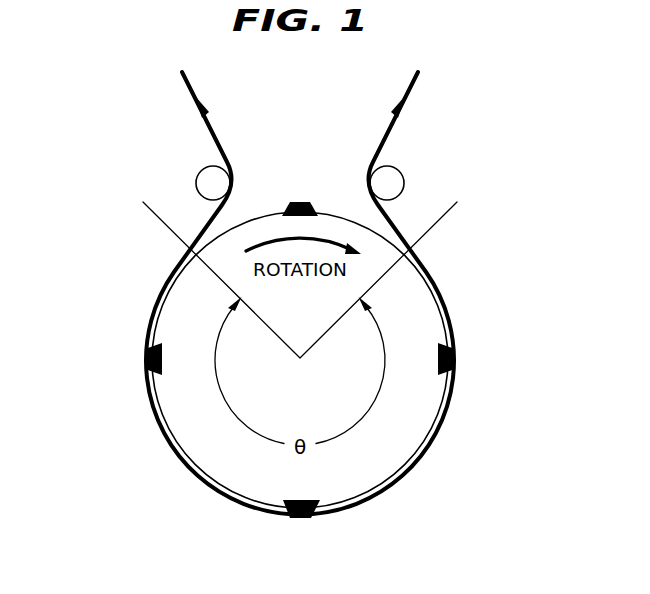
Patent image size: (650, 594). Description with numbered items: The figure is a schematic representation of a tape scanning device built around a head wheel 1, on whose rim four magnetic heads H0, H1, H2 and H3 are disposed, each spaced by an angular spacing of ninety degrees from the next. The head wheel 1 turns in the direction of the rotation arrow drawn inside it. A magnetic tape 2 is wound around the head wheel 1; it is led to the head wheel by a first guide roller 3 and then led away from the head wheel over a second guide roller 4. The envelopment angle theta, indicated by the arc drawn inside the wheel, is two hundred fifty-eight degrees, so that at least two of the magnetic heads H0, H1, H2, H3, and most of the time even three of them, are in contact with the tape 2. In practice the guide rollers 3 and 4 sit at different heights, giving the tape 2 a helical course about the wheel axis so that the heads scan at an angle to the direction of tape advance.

The head wheel 1 is at (217, 458).
The magnetic tape 2 is at (207, 98).
The first guide roller 3 is at (202, 178).
The second guide roller 4 is at (393, 175).
The magnetic head H0 is at (300, 202).
The magnetic head H1 is at (146, 357).
The magnetic head H2 is at (300, 519).
The magnetic head H3 is at (457, 360).